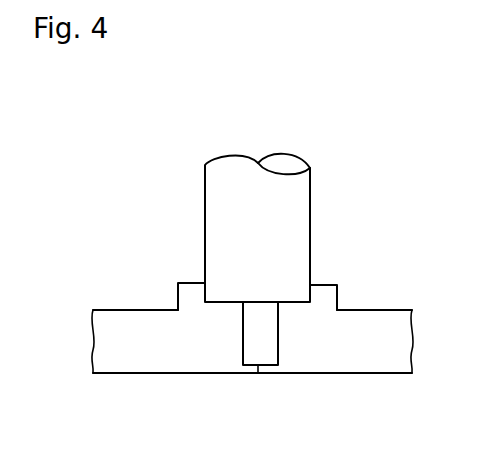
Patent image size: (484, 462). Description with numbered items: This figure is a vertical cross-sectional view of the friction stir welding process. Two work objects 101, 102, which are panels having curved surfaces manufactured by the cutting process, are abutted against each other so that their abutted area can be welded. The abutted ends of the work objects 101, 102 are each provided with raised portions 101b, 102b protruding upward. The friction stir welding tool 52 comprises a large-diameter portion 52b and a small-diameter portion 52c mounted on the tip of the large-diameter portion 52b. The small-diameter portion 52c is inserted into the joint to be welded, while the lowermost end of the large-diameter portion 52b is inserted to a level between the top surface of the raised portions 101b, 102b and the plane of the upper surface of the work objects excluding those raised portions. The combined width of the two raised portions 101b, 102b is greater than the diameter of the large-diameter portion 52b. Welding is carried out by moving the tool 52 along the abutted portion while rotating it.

The friction stir welding tool 52 is at (298, 271).
The large-diameter portion 52b is at (297, 222).
The small-diameter portion 52c is at (268, 340).
The work object 101 is at (252, 343).
The raised portion 101b is at (193, 295).
The work object 102 is at (361, 342).
The raised portion 102b is at (323, 297).